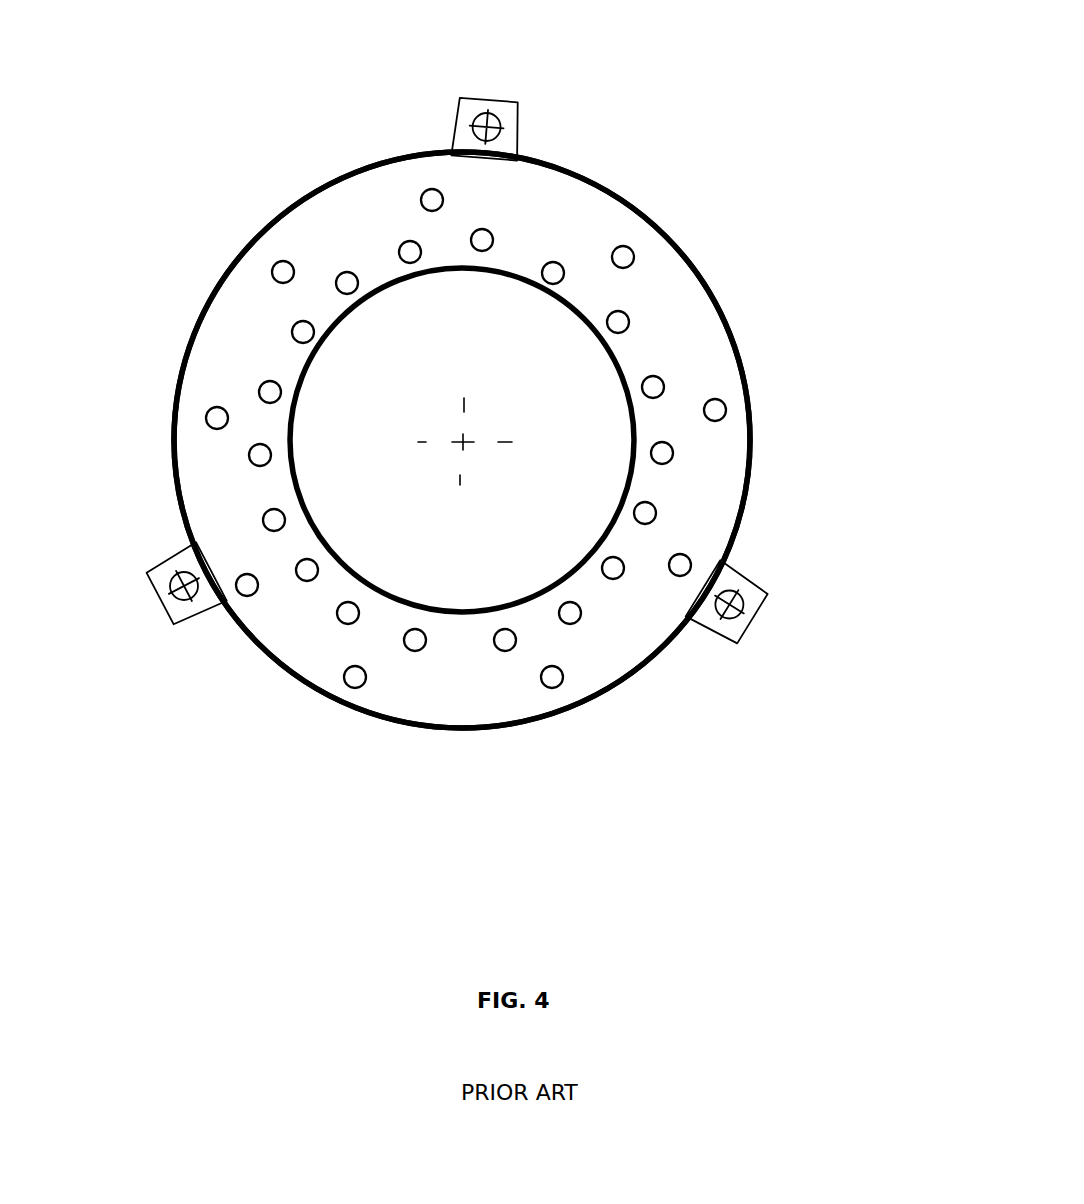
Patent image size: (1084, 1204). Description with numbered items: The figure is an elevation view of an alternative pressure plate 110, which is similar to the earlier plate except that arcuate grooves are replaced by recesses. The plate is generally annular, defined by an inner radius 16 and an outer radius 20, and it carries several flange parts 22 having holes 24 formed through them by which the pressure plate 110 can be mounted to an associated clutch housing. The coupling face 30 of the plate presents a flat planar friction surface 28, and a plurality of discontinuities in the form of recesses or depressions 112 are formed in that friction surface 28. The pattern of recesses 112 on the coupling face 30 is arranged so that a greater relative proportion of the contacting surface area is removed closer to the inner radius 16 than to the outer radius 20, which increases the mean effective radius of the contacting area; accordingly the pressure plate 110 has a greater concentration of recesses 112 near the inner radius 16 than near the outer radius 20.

The alternative pressure plate 110 is at (663, 148).
The inner radius 16 is at (463, 442).
The outer radius 20 is at (463, 442).
The flange parts 22 is at (468, 107).
The holes 24 is at (486, 112).
The friction surface 28 is at (264, 350).
The coupling face 30 is at (228, 323).
The recesses or depressions 112 is at (408, 250).